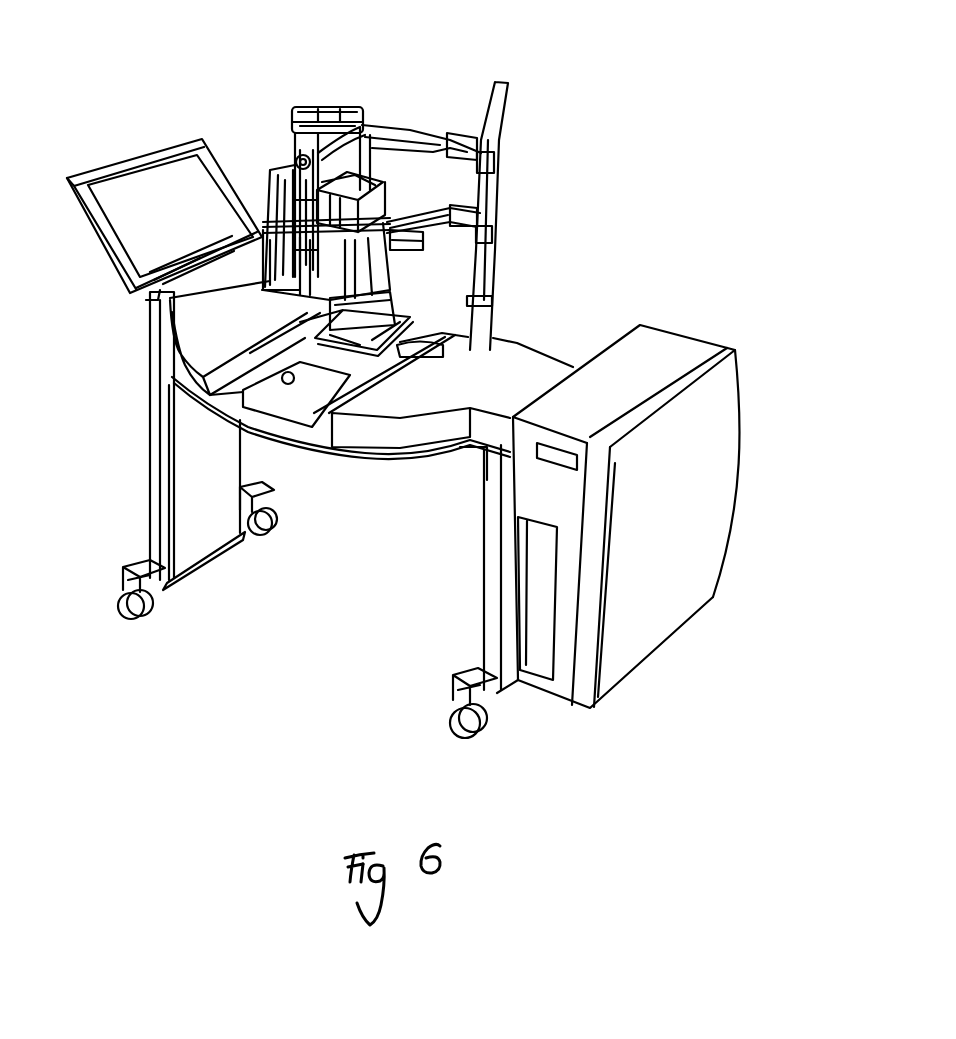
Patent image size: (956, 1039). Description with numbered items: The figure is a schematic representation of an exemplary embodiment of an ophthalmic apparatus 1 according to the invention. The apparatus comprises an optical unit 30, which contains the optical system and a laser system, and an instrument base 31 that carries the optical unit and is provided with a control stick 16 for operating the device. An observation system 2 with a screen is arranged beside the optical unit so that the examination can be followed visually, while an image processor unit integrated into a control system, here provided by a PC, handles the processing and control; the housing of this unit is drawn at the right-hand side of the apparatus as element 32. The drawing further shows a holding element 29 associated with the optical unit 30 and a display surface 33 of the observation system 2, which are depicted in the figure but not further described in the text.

The ophthalmic examination apparatus 1 is at (630, 120).
The observation system 2 is at (105, 163).
The display screen 33 is at (158, 187).
The optical unit 30 is at (278, 168).
The holding arm 29 is at (338, 92).
The instrument base 31 is at (226, 420).
The control stick 16 is at (292, 386).
The housing cabinet 32 is at (700, 503).